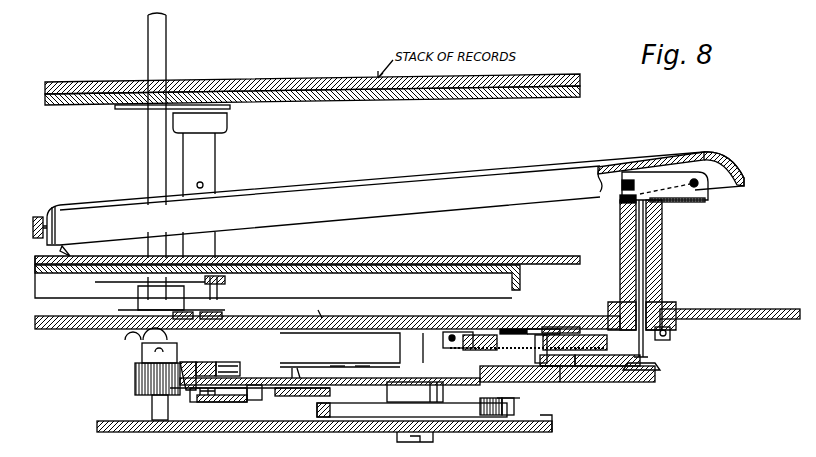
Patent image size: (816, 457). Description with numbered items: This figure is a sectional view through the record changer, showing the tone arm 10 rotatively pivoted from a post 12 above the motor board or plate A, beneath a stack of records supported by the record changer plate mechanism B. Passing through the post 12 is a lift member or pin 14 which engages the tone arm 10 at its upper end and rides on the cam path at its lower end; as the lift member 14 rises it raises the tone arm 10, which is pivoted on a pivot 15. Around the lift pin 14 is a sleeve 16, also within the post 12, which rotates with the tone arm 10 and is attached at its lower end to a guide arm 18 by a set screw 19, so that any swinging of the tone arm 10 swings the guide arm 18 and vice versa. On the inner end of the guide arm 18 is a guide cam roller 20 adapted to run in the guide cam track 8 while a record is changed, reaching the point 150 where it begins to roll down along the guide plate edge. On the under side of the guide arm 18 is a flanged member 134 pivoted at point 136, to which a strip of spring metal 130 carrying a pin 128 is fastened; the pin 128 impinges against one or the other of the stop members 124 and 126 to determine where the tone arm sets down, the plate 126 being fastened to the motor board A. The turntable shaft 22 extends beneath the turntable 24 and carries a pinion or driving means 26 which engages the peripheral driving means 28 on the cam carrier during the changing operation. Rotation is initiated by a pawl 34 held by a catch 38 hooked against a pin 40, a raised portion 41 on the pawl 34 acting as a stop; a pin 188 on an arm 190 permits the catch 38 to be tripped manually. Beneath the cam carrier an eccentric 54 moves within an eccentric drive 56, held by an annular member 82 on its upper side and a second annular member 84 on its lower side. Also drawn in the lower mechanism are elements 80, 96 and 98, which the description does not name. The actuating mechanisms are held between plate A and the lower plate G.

The guide cam track 8 is at (222, 369).
The tone arm 10 is at (495, 165).
The post 12 is at (662, 231).
The lift member or pin 14 is at (655, 348).
The pivot 15 is at (704, 190).
The sleeve 16 is at (650, 253).
The guide arm 18 is at (588, 345).
The set screw 19 is at (670, 333).
The guide cam roller 20 is at (448, 334).
The turntable shaft 22 is at (148, 152).
The turntable 24 is at (374, 290).
The pinion or driving means 26 is at (135, 382).
The peripheral driving means 28 is at (190, 367).
The pawl 34 is at (229, 402).
The catch 38 is at (283, 394).
The pin 40 is at (256, 397).
The raised portion 41 is at (220, 387).
The eccentric 54 is at (470, 419).
The eccentric drive 56 is at (514, 408).
The bracket 80 is at (430, 441).
The annular member 82 is at (505, 401).
The second annular member 84 is at (552, 418).
The lever 96 is at (335, 365).
The lever 98 is at (361, 366).
The stop member 124 is at (540, 335).
The stop member 126 is at (566, 335).
The pin 128 is at (552, 330).
The strip of spring metal 130 is at (592, 380).
The flanged member 134 is at (520, 333).
The pivot point 136 is at (482, 331).
The point 150 is at (560, 380).
The pin 188 is at (292, 373).
The arm 190 is at (297, 370).
The plate A is at (318, 307).
The record changer plate mechanism B is at (220, 142).
The lower plate G is at (346, 424).